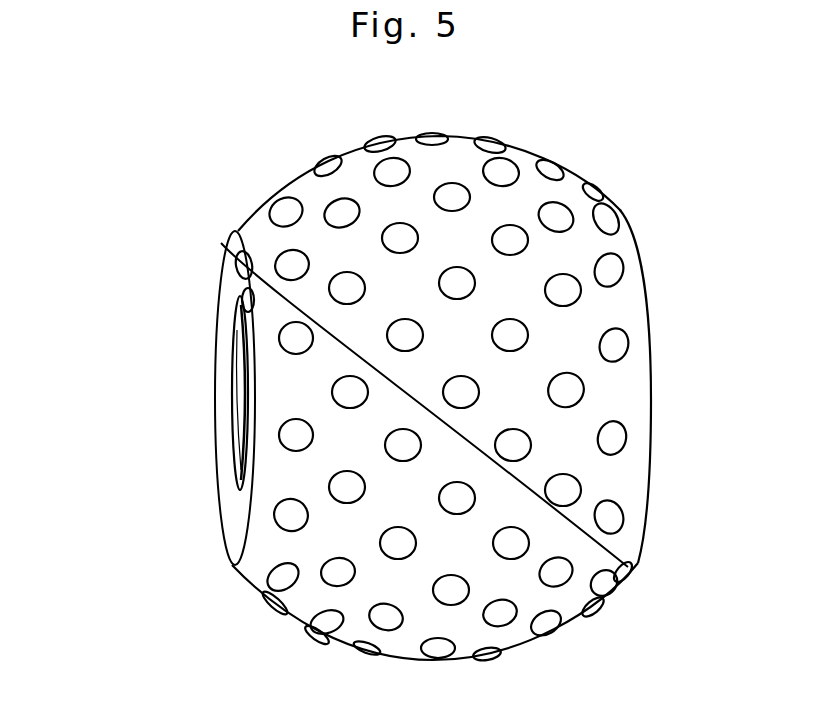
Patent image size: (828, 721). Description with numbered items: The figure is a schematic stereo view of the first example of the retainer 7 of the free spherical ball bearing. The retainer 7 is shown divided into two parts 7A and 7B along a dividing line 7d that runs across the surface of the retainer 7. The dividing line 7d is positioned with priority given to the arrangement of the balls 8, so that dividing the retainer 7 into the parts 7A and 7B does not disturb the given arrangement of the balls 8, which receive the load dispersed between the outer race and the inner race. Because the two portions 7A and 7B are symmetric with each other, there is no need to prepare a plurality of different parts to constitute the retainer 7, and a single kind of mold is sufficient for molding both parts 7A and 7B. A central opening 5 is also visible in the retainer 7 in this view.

The retainer 7 is at (136, 268).
The first part of the retainer 7A is at (305, 188).
The second part of the retainer 7B is at (357, 625).
The dividing line 7d is at (250, 272).
The shaft hole 5 is at (238, 392).
The balls 8 is at (617, 270).